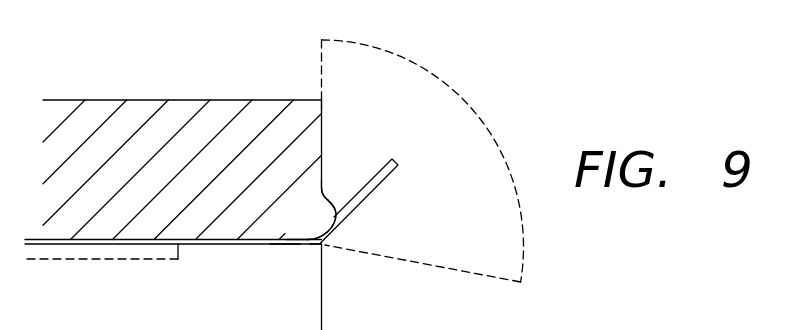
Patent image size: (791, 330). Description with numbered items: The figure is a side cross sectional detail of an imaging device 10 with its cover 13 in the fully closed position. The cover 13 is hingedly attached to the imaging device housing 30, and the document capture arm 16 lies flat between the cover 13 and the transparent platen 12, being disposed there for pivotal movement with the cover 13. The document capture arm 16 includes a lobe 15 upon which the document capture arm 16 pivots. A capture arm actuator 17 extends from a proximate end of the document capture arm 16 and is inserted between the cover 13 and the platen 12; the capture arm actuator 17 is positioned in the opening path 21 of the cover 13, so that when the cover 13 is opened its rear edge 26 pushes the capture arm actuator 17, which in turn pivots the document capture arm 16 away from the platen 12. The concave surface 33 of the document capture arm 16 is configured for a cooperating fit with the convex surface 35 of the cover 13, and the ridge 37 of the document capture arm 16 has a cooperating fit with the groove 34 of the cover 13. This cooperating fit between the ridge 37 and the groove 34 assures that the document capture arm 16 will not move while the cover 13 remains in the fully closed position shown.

The imaging device 10 is at (560, 50).
The transparent platen 12 is at (90, 259).
The cover 13 is at (143, 108).
The lobe 15 is at (322, 247).
The document capture arm 16 is at (203, 245).
The capture arm actuator 17 is at (373, 189).
The opening path 21 is at (450, 85).
The rear edge 26 is at (323, 119).
The imaging device housing 30 is at (322, 302).
The concave surface 33 is at (306, 231).
The groove 34 is at (286, 228).
The convex surface 35 is at (325, 188).
The ridge 37 is at (285, 242).